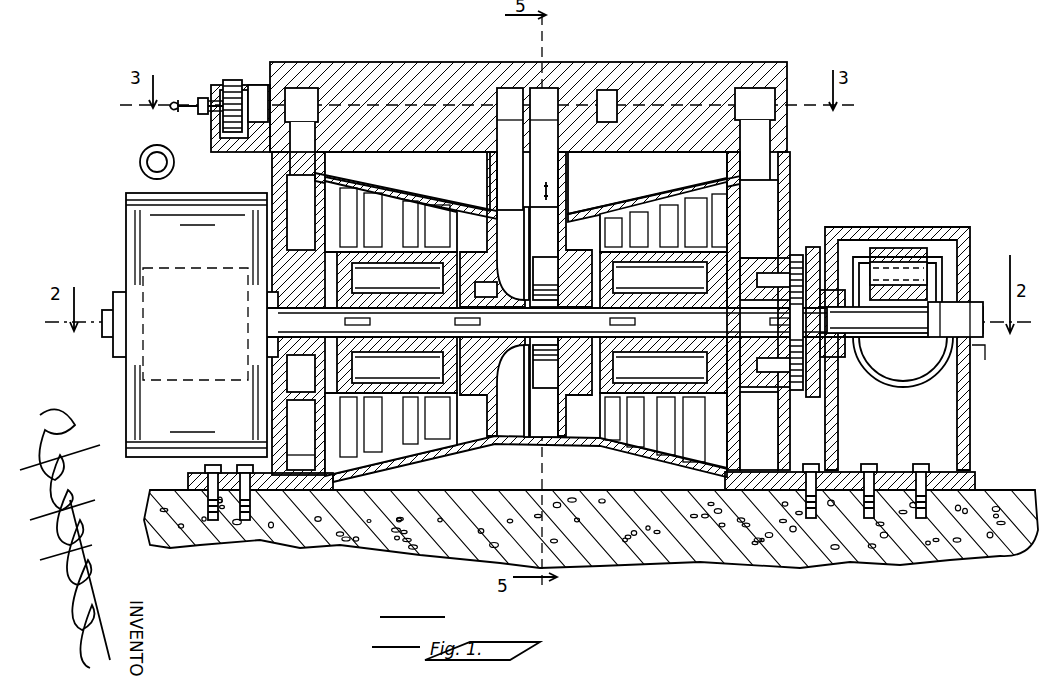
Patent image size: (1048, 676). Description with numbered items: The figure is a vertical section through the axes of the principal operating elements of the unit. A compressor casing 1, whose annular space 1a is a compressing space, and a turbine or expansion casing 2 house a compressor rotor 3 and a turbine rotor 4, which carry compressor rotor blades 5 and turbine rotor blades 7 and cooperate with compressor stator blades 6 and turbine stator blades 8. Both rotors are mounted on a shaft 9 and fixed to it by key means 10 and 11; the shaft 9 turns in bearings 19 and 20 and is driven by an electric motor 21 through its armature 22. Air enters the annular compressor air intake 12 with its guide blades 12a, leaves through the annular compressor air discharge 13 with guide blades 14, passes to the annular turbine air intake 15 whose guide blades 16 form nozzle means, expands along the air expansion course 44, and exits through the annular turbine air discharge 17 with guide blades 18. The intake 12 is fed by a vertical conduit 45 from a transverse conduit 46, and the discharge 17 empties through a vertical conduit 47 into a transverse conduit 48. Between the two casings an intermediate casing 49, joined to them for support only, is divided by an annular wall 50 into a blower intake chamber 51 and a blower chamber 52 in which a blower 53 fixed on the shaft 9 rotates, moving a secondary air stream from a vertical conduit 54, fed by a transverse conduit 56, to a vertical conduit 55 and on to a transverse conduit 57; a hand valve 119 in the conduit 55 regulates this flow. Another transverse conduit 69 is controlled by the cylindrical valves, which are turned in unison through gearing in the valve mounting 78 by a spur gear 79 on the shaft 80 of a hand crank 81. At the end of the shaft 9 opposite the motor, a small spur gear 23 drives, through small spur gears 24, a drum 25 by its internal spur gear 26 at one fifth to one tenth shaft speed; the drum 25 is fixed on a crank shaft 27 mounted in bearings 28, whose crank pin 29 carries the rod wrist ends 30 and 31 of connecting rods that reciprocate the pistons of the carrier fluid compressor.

The compressor casing 1 is at (405, 200).
The annular space 1a is at (375, 472).
The turbine casing 2 is at (648, 196).
The compressor rotor 3 is at (356, 282).
The turbine rotor 4 is at (610, 280).
The compressor rotor blades 5 is at (348, 192).
The compressor stator blades 6 is at (372, 202).
The turbine rotor blades 7 is at (694, 195).
The turbine stator blades 8 is at (676, 200).
The shaft 9 is at (108, 340).
The key means 10 is at (362, 356).
The key means 11 is at (628, 340).
The compressor air intake 12 is at (301, 435).
The guide blades 12a is at (318, 447).
The compressor air discharge 13 is at (482, 425).
The guide blades 14 is at (466, 432).
The turbine air intake 15 is at (573, 430).
The guide blades 16 is at (595, 430).
The turbine air discharge 17 is at (785, 428).
The guide blades 18 is at (735, 455).
The bearing 19 is at (305, 360).
The bearing 20 is at (745, 395).
The electric motor 21 is at (157, 218).
The armature 22 is at (172, 268).
The small spur gear 23 is at (752, 280).
The small spur gears 24 is at (833, 265).
The drum 25 is at (810, 275).
The internal spur gear 26 is at (797, 262).
The crank shaft 27 is at (868, 332).
The bearings 28 is at (855, 356).
The crank pin 29 is at (938, 268).
The rod wrist end 30 is at (880, 250).
The rod wrist end 31 is at (900, 248).
The air expansion course 44 is at (613, 216).
The vertical conduit 45 is at (295, 170).
The transverse conduit 46 is at (298, 95).
The vertical conduit 47 is at (753, 166).
The transverse conduit 48 is at (748, 95).
The intermediate casing 49 is at (522, 448).
The annular wall 50 is at (507, 242).
The blower intake chamber 51 is at (492, 229).
The blower chamber 52 is at (561, 294).
The blower 53 is at (534, 284).
The vertical conduit 54 is at (512, 163).
The vertical conduit 55 is at (547, 185).
The transverse conduit 56 is at (503, 95).
The transverse conduit 57 is at (553, 95).
The transverse conduit 69 is at (608, 95).
The valve mounting 78 is at (705, 63).
The spur gear 79 is at (230, 81).
The shaft 80 is at (256, 86).
The hand crank 81 is at (181, 100).
The hand valve 119 is at (549, 190).